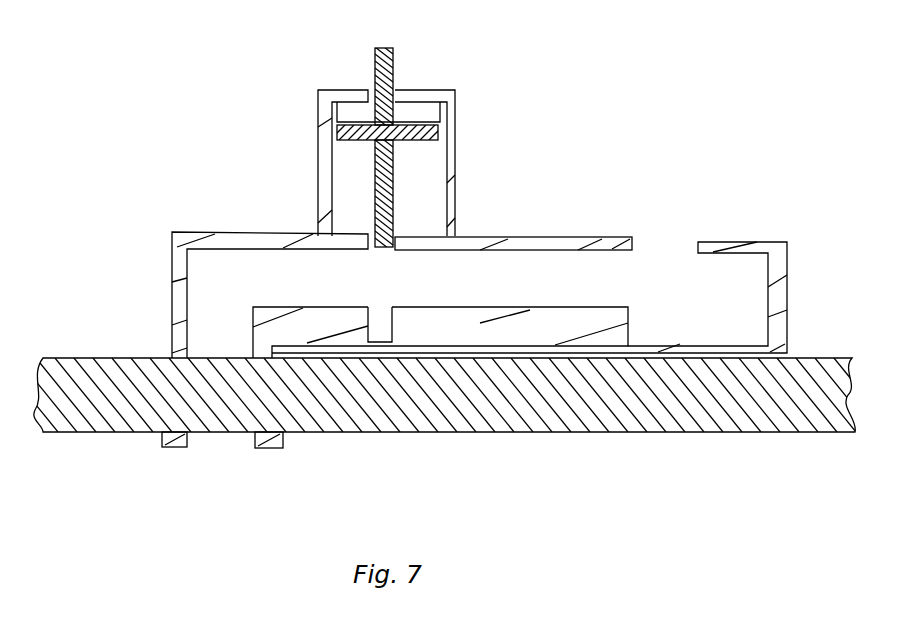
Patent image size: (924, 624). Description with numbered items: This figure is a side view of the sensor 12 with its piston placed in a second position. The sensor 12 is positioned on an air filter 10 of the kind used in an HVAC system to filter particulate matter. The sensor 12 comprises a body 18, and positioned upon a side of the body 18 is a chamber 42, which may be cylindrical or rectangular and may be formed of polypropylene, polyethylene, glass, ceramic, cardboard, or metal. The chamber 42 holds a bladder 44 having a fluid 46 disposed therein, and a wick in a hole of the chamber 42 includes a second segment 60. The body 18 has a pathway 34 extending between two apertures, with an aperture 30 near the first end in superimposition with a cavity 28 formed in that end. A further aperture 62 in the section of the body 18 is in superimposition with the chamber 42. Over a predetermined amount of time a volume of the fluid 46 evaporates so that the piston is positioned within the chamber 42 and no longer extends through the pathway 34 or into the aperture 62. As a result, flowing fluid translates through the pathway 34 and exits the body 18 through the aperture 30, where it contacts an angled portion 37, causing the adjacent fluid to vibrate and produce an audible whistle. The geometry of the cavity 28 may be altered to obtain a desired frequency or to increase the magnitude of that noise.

The air filter 10 is at (845, 395).
The sensor 12 is at (175, 122).
The body 18 is at (545, 245).
The cavity 28 is at (757, 305).
The aperture 30 is at (265, 272).
The pathway 34 is at (310, 263).
The angled portion 37 is at (700, 248).
The chamber 42 is at (457, 160).
The bladder 44 is at (440, 110).
The fluid 46 is at (345, 112).
The second segment 60 is at (390, 192).
The aperture 62 is at (385, 305).